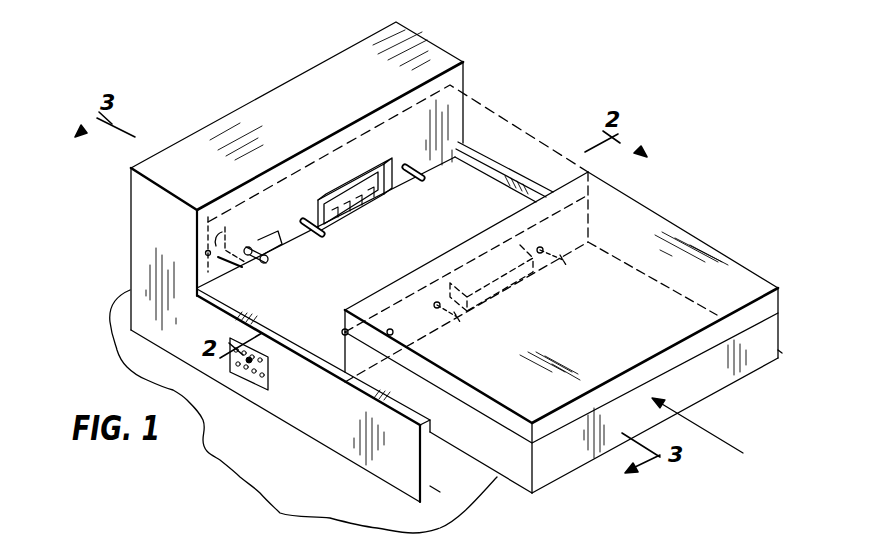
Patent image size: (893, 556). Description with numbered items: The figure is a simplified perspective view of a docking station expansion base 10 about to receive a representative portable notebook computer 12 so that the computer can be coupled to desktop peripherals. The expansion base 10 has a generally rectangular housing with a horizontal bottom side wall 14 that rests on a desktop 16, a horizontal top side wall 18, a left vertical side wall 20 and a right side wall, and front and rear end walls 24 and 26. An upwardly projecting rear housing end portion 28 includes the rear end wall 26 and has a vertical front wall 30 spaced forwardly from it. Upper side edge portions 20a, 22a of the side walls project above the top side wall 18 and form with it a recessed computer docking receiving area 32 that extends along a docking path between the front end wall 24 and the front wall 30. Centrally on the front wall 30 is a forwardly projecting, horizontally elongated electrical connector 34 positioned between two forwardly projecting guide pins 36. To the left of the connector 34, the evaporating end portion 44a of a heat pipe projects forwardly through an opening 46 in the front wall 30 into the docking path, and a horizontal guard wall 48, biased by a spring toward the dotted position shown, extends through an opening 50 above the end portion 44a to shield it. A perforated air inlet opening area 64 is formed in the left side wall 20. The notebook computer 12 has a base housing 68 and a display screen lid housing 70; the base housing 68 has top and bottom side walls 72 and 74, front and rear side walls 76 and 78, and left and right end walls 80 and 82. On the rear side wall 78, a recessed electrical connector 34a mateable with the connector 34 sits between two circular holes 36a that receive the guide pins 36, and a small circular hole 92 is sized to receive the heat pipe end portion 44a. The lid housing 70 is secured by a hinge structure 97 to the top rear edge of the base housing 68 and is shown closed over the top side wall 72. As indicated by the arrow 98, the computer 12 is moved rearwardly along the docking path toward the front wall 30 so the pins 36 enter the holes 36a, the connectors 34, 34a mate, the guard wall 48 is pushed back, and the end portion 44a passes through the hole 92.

The docking station expansion base 10 is at (467, 29).
The portable notebook computer 12 is at (510, 105).
The bottom side wall 14 is at (365, 462).
The desktop 16 is at (303, 480).
The top side wall 18 is at (421, 236).
The left vertical side wall 20 is at (320, 417).
The upper side edge portion 20a is at (338, 364).
The upper side edge portion 22a is at (522, 192).
The front end wall 24 is at (433, 487).
The rear end wall 26 is at (131, 246).
The upwardly projecting rear housing end portion 28 is at (320, 78).
The vertical front wall 30 is at (450, 98).
The recessed computer docking receiving area 32 is at (497, 195).
The electrical connector 34 is at (370, 170).
The recessed electrical connector 34a is at (510, 283).
The guide pins 36 is at (413, 163).
The circular holes 36a is at (566, 260).
The evaporating end portion 44a is at (280, 250).
The opening 46 is at (254, 252).
The guard wall 48 is at (266, 225).
The opening 50 is at (196, 220).
The perforated air inlet opening area 64 is at (258, 385).
The base housing 68 is at (784, 309).
The display screen lid housing 70 is at (724, 235).
The top side wall 72 is at (693, 357).
The bottom side wall 74 is at (743, 378).
The front side wall 76 is at (582, 460).
The rear side wall 78 is at (342, 350).
The left end wall 80 is at (481, 437).
The right end wall 82 is at (780, 347).
The circular hole 92 is at (393, 332).
The hinge structure 97 is at (344, 330).
The arrow 98 is at (738, 448).